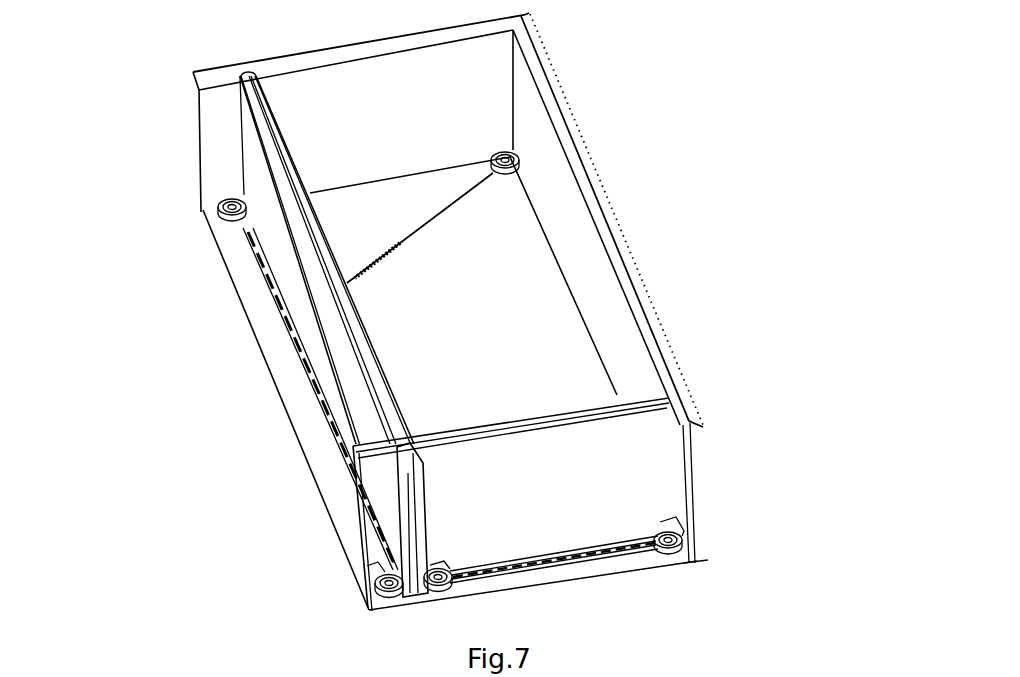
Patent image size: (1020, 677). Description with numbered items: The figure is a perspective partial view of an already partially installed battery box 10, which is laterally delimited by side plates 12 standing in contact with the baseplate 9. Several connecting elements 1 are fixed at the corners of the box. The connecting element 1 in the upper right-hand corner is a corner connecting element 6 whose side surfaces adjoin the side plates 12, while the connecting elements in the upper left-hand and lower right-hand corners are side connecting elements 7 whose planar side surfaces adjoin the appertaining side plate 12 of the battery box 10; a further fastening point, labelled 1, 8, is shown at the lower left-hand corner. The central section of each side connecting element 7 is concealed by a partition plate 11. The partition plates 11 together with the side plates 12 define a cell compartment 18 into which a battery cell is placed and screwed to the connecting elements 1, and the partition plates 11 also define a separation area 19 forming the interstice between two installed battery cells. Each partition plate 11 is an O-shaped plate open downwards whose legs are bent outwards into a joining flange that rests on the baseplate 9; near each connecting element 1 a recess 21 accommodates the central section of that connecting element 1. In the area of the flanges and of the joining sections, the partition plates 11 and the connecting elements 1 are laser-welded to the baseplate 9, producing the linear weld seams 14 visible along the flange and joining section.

The connecting element 1 is at (450, 395).
The corner connecting element 6 is at (518, 172).
The side connecting element 7 is at (210, 220).
The screw 8 is at (373, 603).
The baseplate 9 is at (503, 310).
The battery box 10 is at (201, 469).
The partition plate 11 is at (330, 357).
The side plate 12 is at (323, 137).
The weld seam 14 is at (263, 317).
The cell compartment 18 is at (536, 372).
The separation area 19 is at (422, 603).
The recess 21 is at (415, 567).